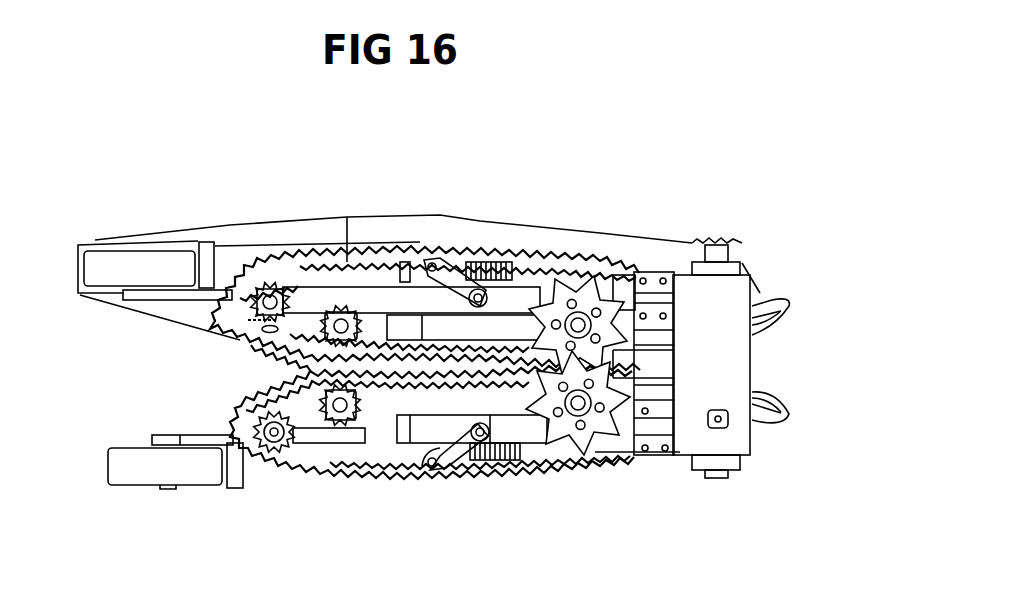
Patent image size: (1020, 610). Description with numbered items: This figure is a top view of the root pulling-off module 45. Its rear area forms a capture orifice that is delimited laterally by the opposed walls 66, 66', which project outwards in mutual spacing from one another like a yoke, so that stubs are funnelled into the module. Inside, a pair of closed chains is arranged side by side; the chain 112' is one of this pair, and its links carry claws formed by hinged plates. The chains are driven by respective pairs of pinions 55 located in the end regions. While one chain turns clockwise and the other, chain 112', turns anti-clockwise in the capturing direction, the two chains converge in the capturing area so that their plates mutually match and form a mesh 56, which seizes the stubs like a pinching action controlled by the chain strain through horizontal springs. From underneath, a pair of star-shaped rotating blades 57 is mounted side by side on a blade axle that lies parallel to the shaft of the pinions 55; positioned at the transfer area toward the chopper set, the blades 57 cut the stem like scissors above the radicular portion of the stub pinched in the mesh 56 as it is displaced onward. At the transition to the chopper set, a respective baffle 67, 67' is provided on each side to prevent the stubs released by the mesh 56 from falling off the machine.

The mounting block 45 is at (733, 178).
The pinions 55 is at (280, 443).
The mesh 56 is at (367, 363).
The star-shaped rotating blades 57 is at (583, 297).
The opposed wall 66 is at (159, 314).
The opposed wall 66' is at (175, 462).
The baffle 67 is at (808, 317).
The baffle 67' is at (809, 411).
The chain 112' is at (471, 486).